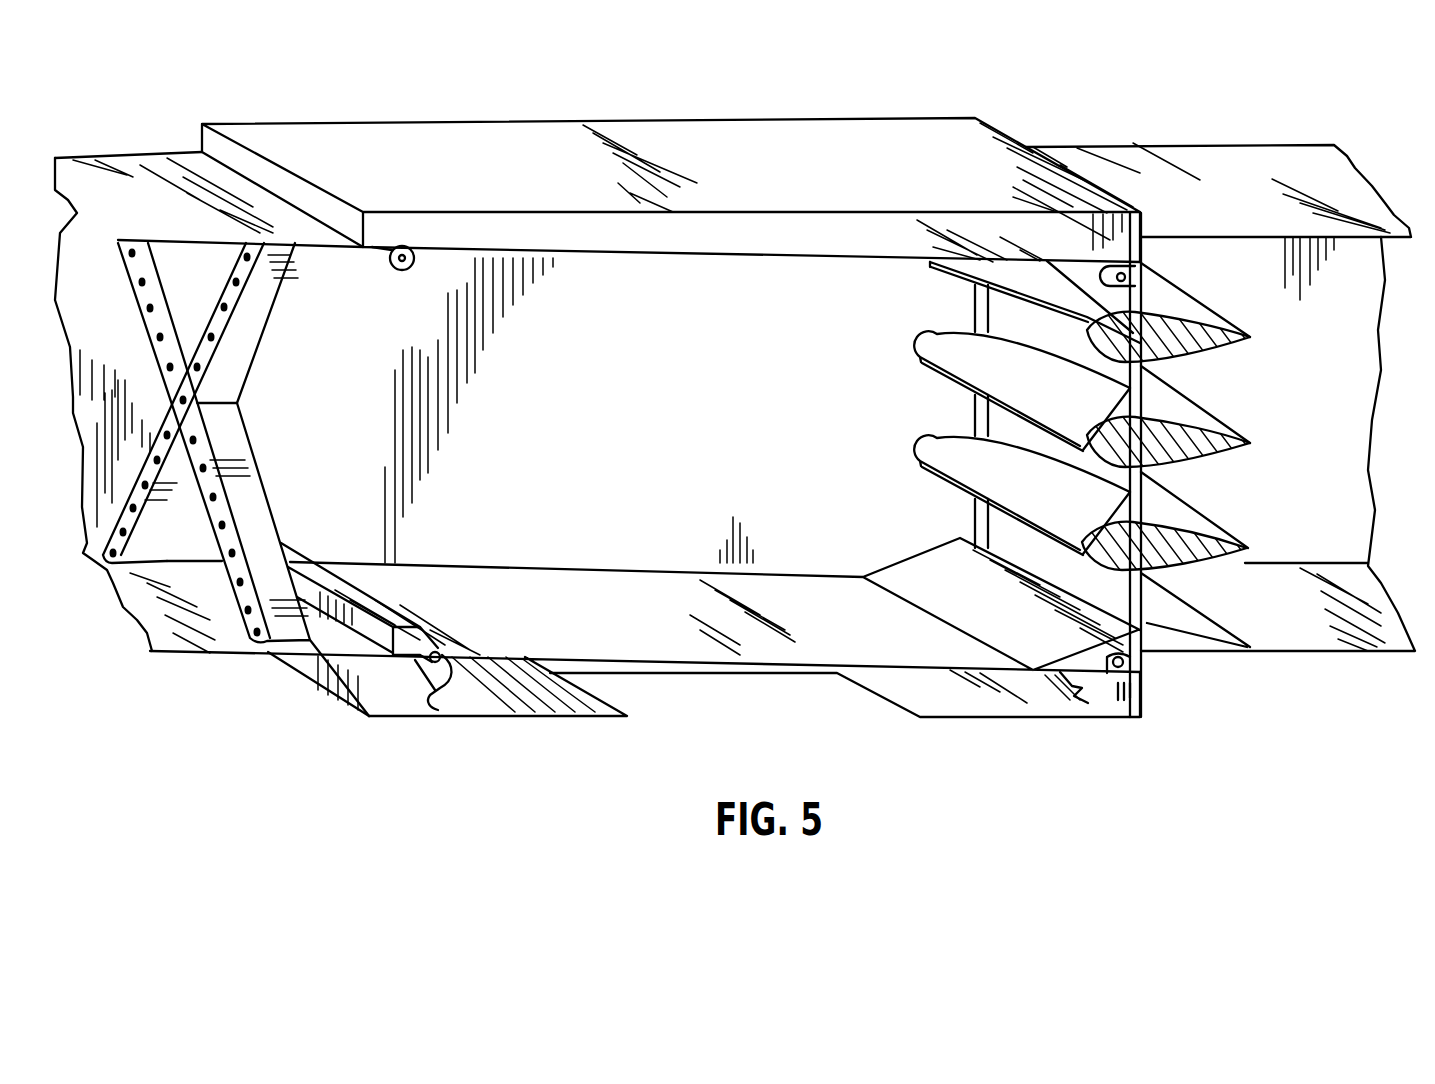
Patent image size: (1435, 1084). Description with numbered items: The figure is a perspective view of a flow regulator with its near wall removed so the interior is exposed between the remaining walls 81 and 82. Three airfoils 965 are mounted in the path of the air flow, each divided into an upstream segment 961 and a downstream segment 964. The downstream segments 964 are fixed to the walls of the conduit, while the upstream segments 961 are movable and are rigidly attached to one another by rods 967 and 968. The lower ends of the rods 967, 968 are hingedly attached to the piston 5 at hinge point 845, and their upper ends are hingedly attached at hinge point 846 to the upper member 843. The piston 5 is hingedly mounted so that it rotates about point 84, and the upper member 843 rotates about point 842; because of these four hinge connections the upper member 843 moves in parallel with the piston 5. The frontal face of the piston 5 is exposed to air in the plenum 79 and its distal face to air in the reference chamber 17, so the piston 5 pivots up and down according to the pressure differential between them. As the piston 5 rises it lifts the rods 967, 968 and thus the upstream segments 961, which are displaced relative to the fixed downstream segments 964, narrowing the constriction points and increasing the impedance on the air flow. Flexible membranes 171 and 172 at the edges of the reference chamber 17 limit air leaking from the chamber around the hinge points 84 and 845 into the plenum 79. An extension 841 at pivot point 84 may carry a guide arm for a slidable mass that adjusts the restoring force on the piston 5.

The piston 5 is at (527, 657).
The reference chamber 17 is at (940, 688).
The plenum 79 is at (616, 427).
The left wall 81 is at (120, 636).
The right wall 82 is at (1299, 656).
The pivot point 84 is at (417, 665).
The flexible membrane 171 is at (1057, 700).
The flexible membrane 172 is at (427, 710).
The extension 841 is at (347, 683).
The pivot point 842 is at (362, 238).
The upper member 843 is at (712, 240).
The hinge point 845 is at (1118, 668).
The hinge point 846 is at (1112, 278).
The upstream segment 961 is at (975, 270).
The downstream segment 964 is at (1163, 300).
The airfoil 965 is at (1262, 346).
The rod 967 is at (970, 515).
The rod 968 is at (1147, 592).